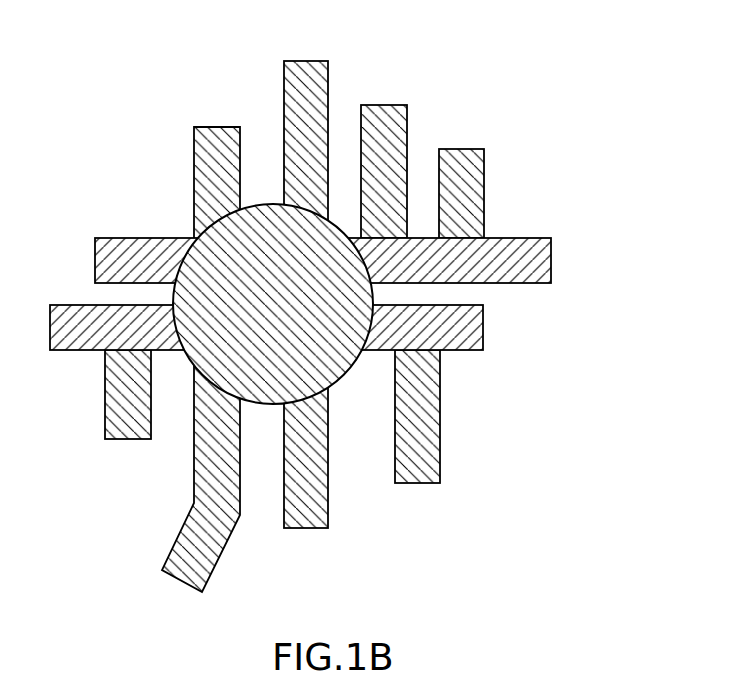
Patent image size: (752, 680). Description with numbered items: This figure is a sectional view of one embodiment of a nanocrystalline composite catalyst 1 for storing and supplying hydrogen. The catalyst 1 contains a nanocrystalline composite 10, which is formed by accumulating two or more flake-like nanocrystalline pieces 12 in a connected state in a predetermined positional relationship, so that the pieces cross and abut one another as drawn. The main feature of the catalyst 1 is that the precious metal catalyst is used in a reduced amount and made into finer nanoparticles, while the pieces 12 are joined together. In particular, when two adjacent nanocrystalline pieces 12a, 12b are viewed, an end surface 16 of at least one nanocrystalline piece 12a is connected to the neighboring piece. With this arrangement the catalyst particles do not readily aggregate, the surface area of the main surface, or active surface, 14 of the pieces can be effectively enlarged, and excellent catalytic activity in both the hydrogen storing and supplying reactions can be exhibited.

The nanocrystalline composite catalyst for storing/supplying hydrogen 1 is at (352, 299).
The nanocrystalline composite 10 is at (383, 253).
The flake-like nanocrystalline piece 12 is at (138, 253).
The nanocrystalline piece 12a is at (467, 170).
The nanocrystalline piece 12b is at (538, 260).
The main surface (active surface) 14 is at (431, 457).
The end surface 16 is at (412, 483).